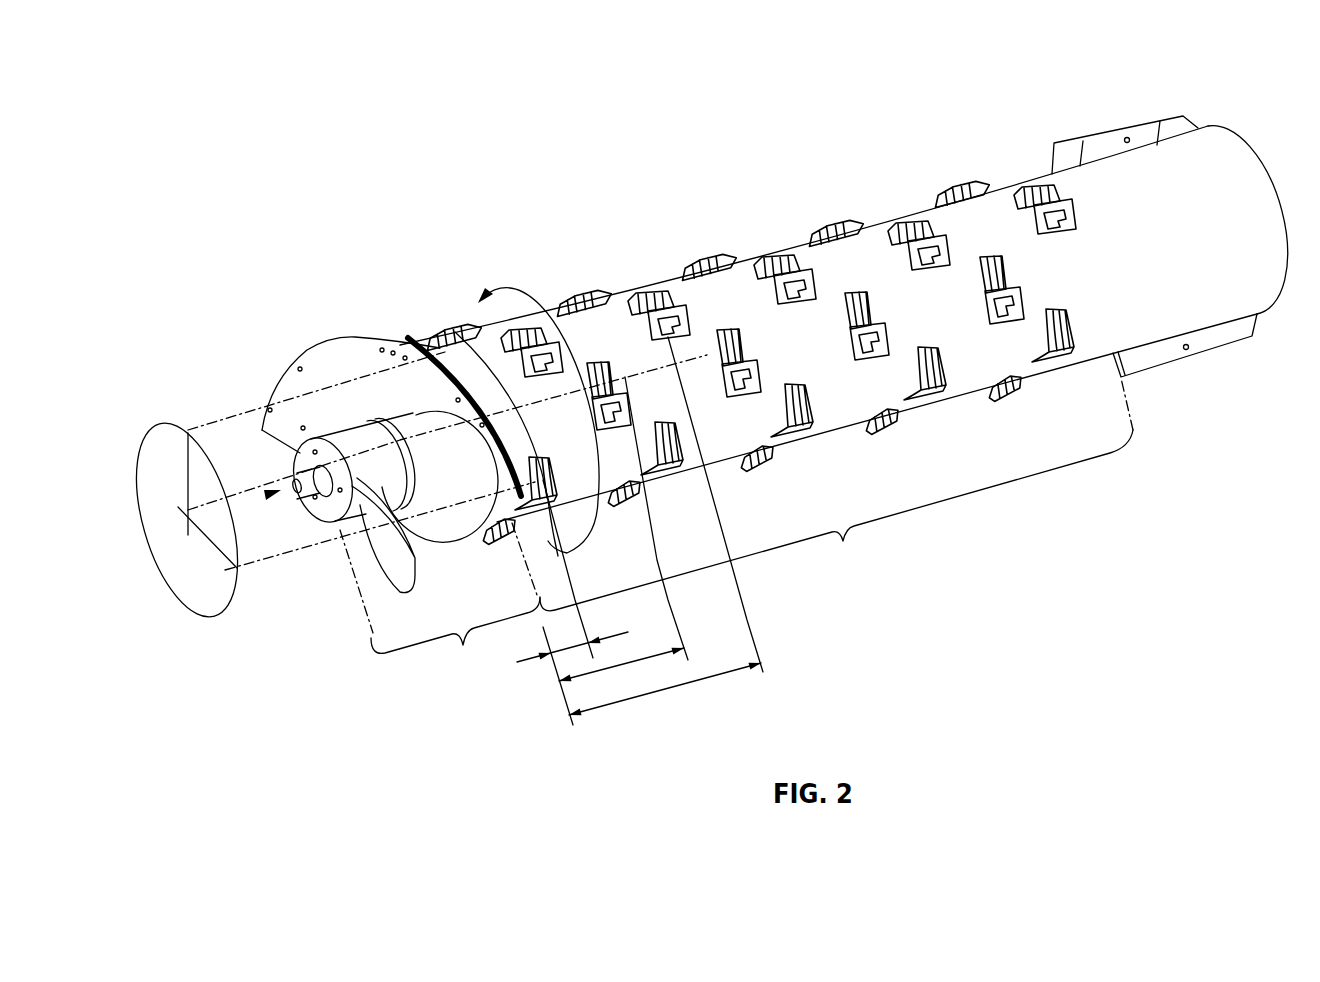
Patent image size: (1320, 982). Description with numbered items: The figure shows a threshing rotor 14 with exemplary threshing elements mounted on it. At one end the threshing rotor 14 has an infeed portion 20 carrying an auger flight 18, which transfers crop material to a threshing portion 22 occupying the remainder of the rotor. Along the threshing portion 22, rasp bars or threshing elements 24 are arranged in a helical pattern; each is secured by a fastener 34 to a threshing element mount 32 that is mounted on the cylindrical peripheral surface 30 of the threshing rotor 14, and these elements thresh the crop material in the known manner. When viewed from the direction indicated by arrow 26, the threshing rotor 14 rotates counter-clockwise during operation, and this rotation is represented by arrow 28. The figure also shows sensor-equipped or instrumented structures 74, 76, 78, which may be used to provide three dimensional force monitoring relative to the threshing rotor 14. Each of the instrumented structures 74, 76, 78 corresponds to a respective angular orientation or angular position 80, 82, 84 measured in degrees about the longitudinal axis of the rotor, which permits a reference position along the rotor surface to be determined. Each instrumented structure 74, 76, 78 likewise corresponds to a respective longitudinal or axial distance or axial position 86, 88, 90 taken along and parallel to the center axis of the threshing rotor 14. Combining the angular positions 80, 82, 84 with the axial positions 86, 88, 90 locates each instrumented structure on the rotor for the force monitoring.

The threshing rotor 14 is at (416, 135).
The auger flight 18 is at (333, 360).
The infeed portion 20 is at (440, 603).
The threshing portion 22 is at (836, 494).
The threshing elements 24 is at (758, 258).
The arrow 26 is at (247, 500).
The arrow 28 is at (517, 278).
The cylindrical peripheral surface 30 is at (1003, 213).
The threshing element mounts 32 is at (856, 340).
The fastener 34 is at (876, 300).
The instrumented structure 74 is at (450, 332).
The instrumented structure 76 is at (576, 368).
The instrumented structure 78 is at (680, 298).
The angular position 80 is at (175, 579).
The angular position 82 is at (237, 568).
The angular position 84 is at (183, 458).
The axial position 86 is at (578, 651).
The axial position 88 is at (626, 672).
The axial position 90 is at (663, 693).